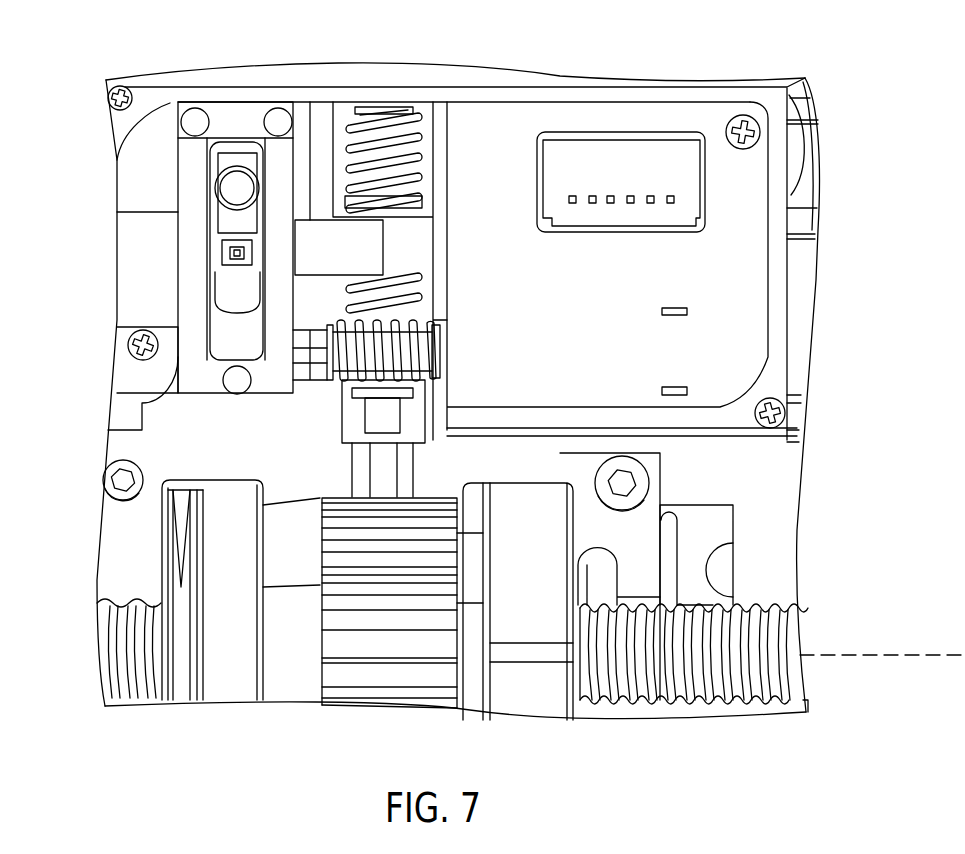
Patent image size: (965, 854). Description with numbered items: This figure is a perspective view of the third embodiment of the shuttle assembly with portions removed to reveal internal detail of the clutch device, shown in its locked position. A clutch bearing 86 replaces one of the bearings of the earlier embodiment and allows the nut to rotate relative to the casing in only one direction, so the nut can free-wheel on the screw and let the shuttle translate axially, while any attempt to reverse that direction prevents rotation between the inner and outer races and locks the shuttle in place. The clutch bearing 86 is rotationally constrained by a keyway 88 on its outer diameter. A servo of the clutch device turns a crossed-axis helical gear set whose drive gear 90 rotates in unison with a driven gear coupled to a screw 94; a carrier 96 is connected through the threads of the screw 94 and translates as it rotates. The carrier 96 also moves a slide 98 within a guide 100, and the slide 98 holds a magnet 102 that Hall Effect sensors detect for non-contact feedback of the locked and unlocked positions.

The clutch bearing 86 is at (535, 717).
The keyway 88 is at (537, 657).
The drive gear 90 is at (440, 336).
The screw 94 is at (417, 163).
The carrier 96 is at (436, 254).
The slide 98 is at (233, 281).
The guide 100 is at (162, 362).
The magnet 102 is at (238, 188).